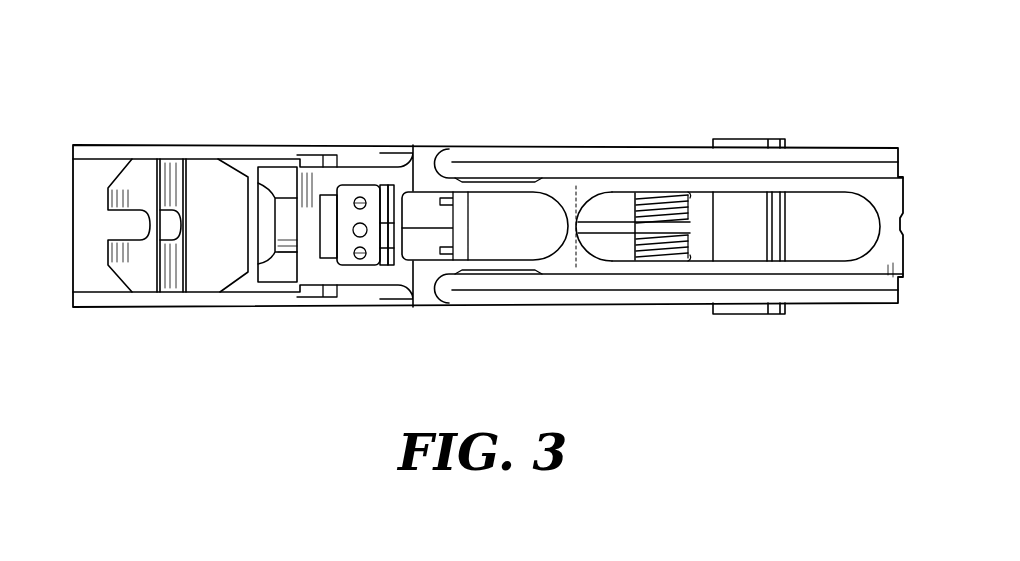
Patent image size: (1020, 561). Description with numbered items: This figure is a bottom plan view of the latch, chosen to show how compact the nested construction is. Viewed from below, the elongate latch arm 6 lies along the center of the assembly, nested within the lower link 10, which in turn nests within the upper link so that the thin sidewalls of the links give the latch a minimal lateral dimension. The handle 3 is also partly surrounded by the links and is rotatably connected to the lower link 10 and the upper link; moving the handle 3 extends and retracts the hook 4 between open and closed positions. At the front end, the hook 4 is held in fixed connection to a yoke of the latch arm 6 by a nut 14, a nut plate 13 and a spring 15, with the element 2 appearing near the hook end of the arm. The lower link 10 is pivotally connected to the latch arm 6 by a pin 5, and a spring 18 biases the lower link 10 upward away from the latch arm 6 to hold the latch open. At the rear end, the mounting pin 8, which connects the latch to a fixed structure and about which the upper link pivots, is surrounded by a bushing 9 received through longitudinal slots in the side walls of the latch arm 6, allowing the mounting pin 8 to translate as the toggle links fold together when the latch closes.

The bolt carrier 2 is at (278, 183).
The handle 3 is at (103, 147).
The hook 4 is at (143, 173).
The pin 5 is at (660, 188).
The latch arm 6 is at (885, 212).
The mounting pin 8 is at (753, 138).
The bushing 9 is at (755, 218).
The lower link 10 is at (510, 230).
The nut plate 13 is at (320, 222).
The nut 14 is at (375, 190).
The spring 15 is at (392, 205).
The spring 18 is at (613, 220).